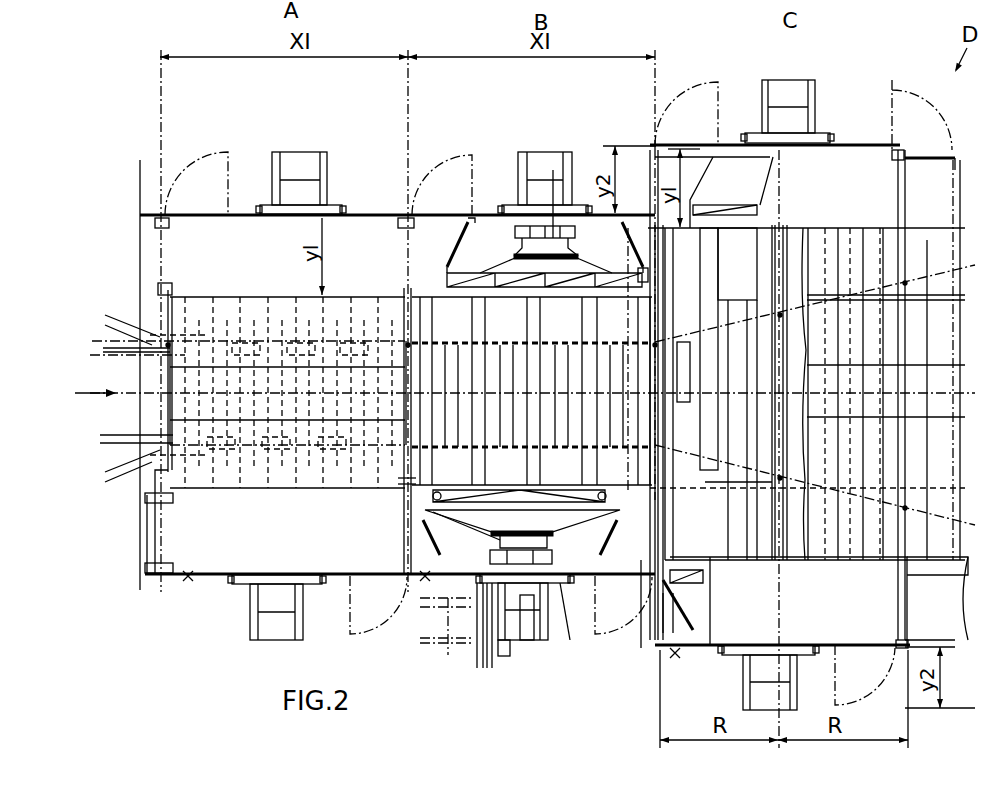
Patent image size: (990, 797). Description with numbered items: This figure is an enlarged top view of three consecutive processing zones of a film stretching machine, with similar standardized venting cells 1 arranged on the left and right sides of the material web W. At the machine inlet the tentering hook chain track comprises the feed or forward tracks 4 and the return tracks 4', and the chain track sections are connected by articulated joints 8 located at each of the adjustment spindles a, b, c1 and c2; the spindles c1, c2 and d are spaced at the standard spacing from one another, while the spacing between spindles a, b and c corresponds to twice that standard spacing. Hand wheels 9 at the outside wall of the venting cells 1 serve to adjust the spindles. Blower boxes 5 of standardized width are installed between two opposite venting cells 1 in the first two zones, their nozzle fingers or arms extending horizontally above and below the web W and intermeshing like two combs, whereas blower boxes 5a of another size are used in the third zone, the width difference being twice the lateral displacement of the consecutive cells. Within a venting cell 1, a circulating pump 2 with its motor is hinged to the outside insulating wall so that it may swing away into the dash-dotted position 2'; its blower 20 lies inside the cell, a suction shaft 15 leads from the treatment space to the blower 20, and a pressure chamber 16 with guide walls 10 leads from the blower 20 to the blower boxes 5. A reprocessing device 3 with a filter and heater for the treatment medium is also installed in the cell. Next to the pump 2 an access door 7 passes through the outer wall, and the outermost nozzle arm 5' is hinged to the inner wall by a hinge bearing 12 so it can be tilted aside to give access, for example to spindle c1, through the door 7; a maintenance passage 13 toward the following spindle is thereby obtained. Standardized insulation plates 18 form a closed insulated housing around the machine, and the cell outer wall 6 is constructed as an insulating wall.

The venting cell 1 is at (493, 185).
The circulating pump 2 is at (526, 395).
The swung-away position of the pump 2' is at (531, 409).
The reprocessing device 3 is at (610, 290).
The feed or forward tracks 4 is at (129, 394).
The return tracks 4' is at (143, 391).
The blower box 5 is at (248, 428).
The outermost nozzle finger or arm 5' is at (532, 359).
The blower box 5a is at (845, 221).
The side wall 6 is at (143, 232).
The access door 7 is at (453, 285).
The articulated joint 8 is at (168, 345).
The hand wheel 9 is at (188, 580).
The guide walls 10 is at (418, 215).
The hinge bearing 12 is at (644, 300).
The maintenance passage 13 is at (644, 413).
The suction shaft 15 is at (500, 512).
The pressure chamber 16 is at (573, 624).
The insulation plate 18 is at (932, 158).
The blower 20 is at (553, 230).
The material web W is at (83, 393).
The adjustment spindle a is at (166, 478).
The adjustment spindle b is at (405, 470).
The adjustment spindle c1 is at (662, 520).
The adjustment spindle c2 is at (776, 520).
The adjustment spindle d is at (912, 520).